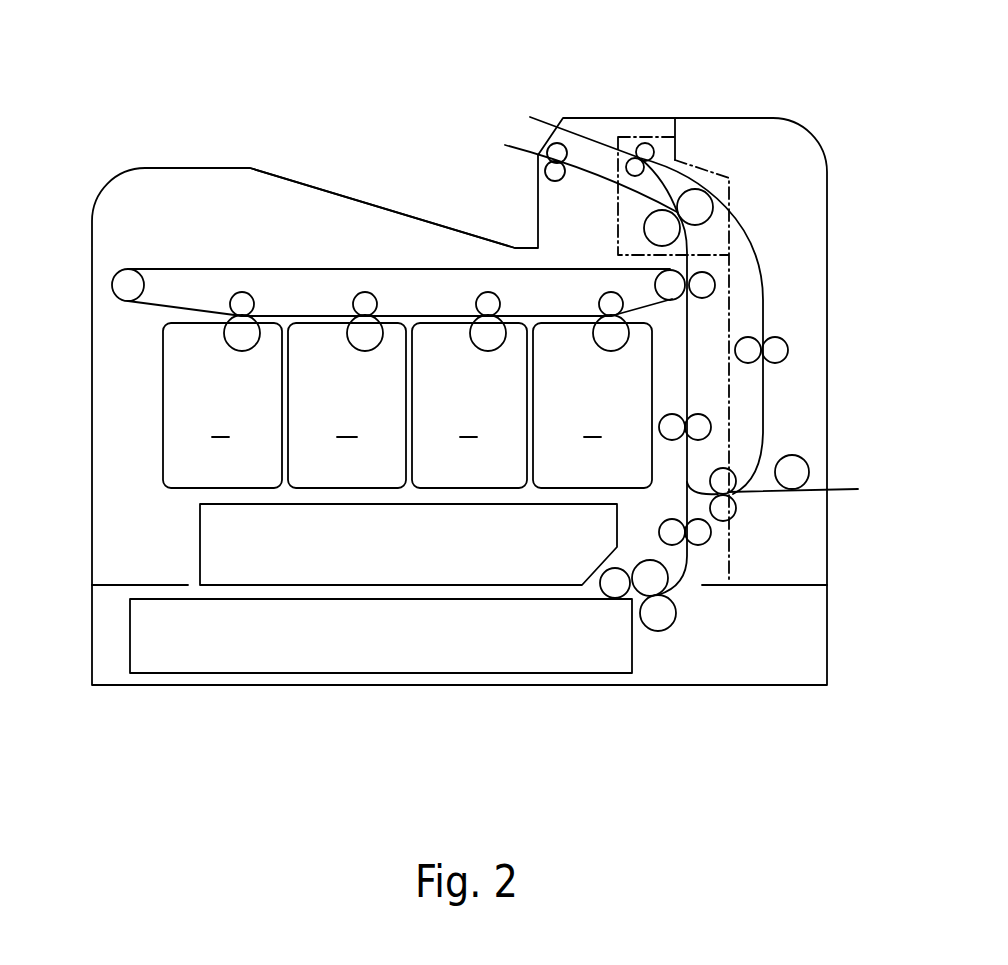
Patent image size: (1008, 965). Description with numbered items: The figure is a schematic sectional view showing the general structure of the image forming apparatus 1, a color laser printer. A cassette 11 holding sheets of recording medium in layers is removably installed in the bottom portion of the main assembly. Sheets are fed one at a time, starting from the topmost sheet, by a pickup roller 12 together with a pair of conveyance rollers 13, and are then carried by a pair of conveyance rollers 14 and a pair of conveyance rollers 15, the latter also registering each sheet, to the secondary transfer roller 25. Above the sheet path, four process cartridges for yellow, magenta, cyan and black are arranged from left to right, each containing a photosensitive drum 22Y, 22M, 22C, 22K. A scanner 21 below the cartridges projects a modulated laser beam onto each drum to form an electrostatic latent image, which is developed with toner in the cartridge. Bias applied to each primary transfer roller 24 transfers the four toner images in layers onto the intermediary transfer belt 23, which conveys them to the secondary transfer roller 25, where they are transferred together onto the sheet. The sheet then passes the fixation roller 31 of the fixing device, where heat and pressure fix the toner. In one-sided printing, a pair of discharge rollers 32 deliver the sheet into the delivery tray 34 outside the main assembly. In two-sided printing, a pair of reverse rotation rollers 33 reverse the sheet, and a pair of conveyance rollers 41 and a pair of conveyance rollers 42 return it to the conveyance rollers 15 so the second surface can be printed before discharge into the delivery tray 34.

The image forming apparatus 1 is at (223, 136).
The cassette 11 is at (418, 637).
The pickup roller 12 is at (613, 590).
The pair of conveyance rollers 13 is at (657, 622).
The pair of conveyance rollers 14 is at (700, 540).
The pair of conveyance rollers 15 is at (700, 428).
The scanner 21 is at (217, 532).
The photosensitive drum 22Y is at (225, 336).
The photosensitive drum 22M is at (350, 336).
The photosensitive drum 22C is at (477, 336).
The photosensitive drum 22K is at (600, 336).
The intermediary transfer belt 23 is at (155, 308).
The primary transfer roller 24 is at (243, 298).
The secondary transfer roller 25 is at (703, 285).
The fixation roller 31 is at (698, 203).
The pair of discharge rollers 32 is at (556, 152).
The pair of reverse rotation rollers 33 is at (645, 150).
The delivery tray 34 is at (310, 184).
The pair of conveyance rollers 41 is at (778, 352).
The pair of conveyance rollers 42 is at (725, 511).